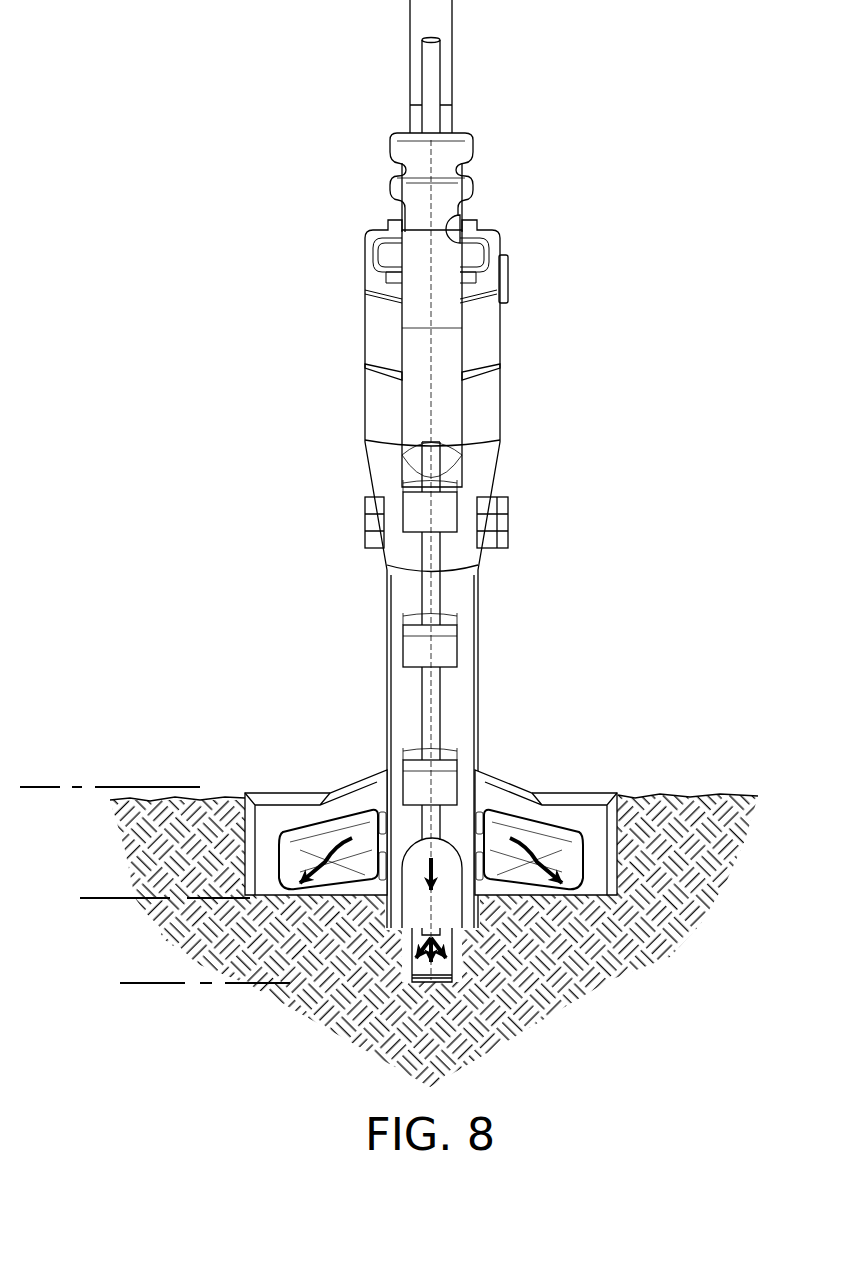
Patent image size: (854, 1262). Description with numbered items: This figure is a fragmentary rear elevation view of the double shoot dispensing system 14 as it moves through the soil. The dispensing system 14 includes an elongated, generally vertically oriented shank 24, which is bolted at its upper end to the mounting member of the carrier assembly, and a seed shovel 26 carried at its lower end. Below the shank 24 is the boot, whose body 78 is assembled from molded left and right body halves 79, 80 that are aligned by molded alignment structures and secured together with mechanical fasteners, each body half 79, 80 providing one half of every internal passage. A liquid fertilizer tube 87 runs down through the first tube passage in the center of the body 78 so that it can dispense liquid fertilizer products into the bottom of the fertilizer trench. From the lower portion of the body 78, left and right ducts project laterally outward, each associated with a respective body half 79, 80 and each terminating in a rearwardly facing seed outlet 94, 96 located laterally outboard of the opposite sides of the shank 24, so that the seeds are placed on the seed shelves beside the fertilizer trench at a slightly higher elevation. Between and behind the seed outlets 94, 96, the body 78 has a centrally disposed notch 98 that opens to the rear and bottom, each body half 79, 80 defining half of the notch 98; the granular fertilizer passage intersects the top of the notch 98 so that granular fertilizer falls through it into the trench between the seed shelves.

The double shoot dispensing system 14 is at (302, 158).
The shank 24 is at (458, 12).
The shovel 26 is at (603, 788).
The body 78 is at (600, 343).
The left body half 79 is at (378, 405).
The right body half 80 is at (487, 405).
The liquid fertilizer tube 87 is at (434, 68).
The seed outlet 94 is at (320, 846).
The seed outlet 96 is at (542, 846).
The notch 98 is at (448, 836).